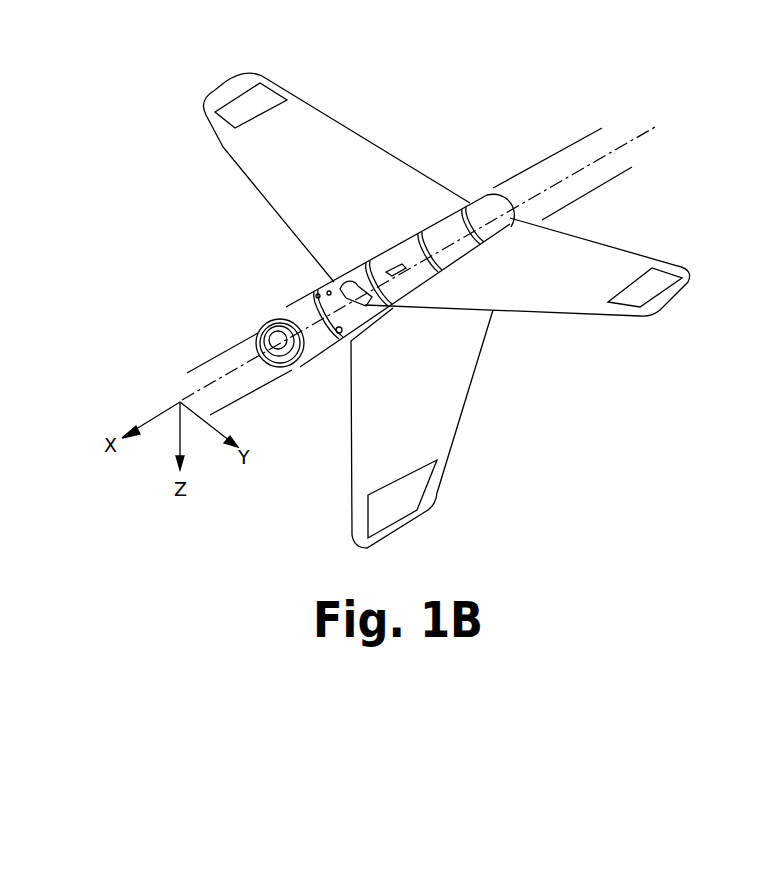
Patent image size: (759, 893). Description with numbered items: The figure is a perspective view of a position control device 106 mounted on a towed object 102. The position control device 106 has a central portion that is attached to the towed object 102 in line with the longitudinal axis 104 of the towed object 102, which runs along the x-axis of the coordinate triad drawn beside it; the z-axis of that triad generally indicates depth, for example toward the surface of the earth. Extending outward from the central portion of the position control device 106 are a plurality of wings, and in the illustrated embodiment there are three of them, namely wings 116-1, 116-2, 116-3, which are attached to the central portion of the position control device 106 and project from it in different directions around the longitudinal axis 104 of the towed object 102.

The towed object 102 is at (420, 310).
The longitudinal axis 104 is at (642, 132).
The position control device 106 is at (267, 311).
The wing 116-1 is at (222, 150).
The wing 116-2 is at (627, 250).
The wing 116-3 is at (460, 399).